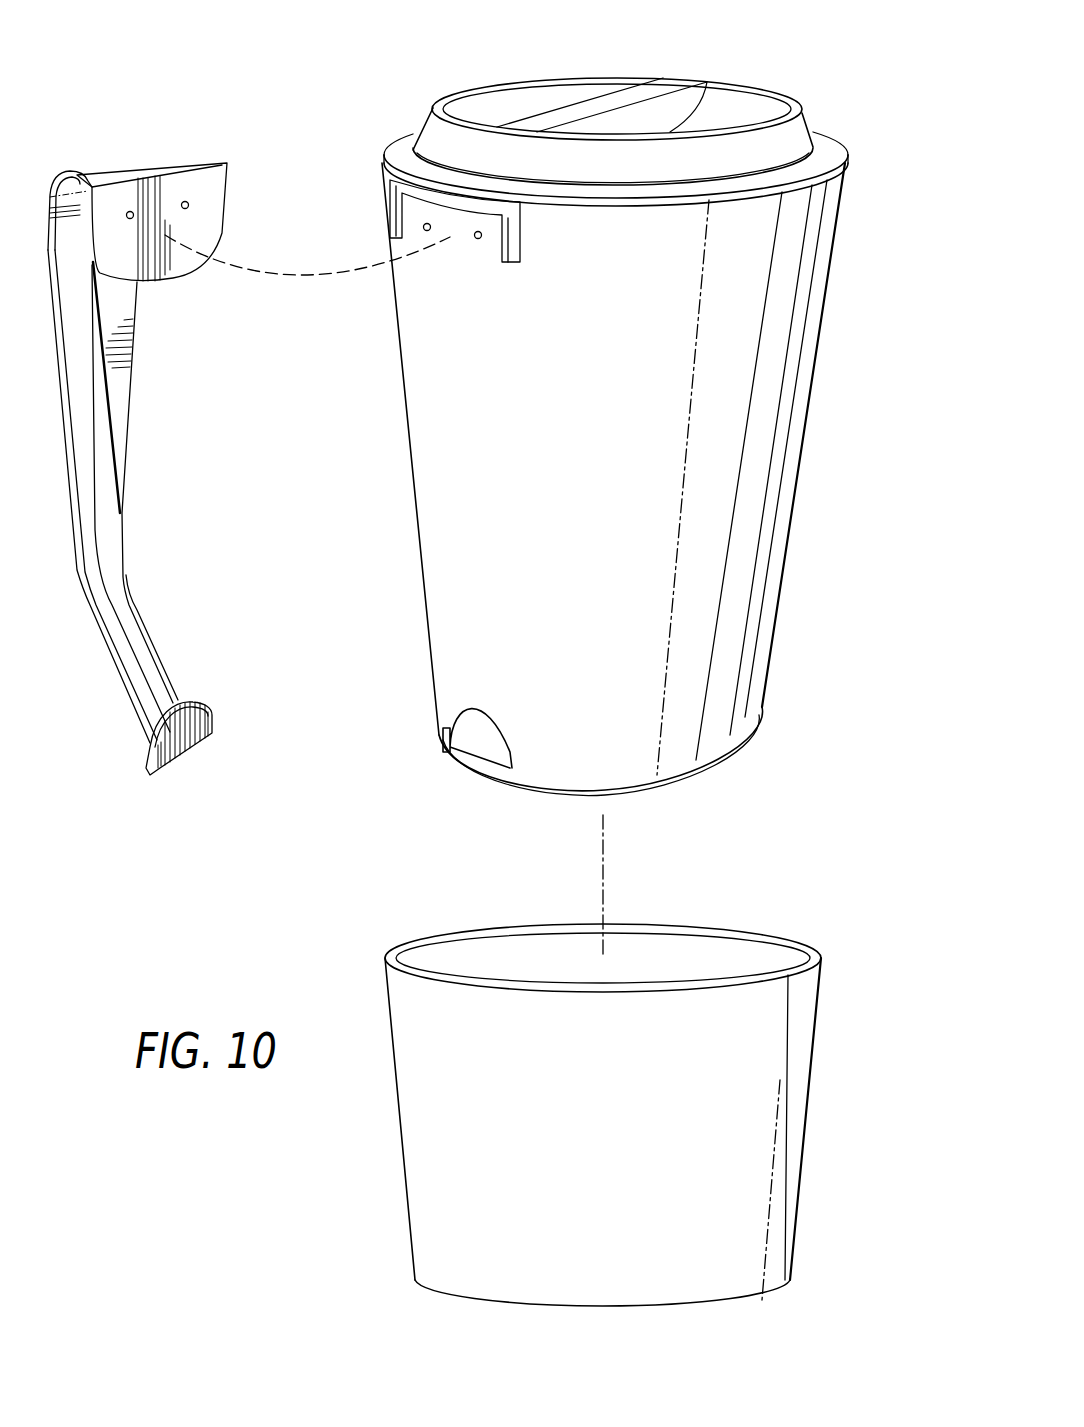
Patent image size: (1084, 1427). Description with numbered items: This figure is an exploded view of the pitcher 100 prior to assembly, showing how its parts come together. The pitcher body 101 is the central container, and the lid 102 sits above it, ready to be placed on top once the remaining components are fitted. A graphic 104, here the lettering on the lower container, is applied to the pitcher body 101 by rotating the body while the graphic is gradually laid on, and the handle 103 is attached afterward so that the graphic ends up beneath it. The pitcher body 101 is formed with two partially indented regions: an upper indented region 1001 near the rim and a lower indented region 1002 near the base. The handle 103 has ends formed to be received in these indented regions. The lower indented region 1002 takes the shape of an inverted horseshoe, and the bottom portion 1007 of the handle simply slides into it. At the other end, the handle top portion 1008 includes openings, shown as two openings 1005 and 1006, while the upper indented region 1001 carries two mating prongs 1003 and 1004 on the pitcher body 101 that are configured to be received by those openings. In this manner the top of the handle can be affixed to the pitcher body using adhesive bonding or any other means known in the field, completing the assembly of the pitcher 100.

The pitcher 100 is at (862, 218).
The pitcher body 101 is at (787, 352).
The lid 102 is at (491, 85).
The handle 103 is at (120, 398).
The graphic 104 is at (767, 1092).
The upper indented region 1001 is at (388, 198).
The lower indented region 1002 is at (480, 732).
The prong 1003 is at (420, 228).
The prong 1004 is at (476, 245).
The opening 1005 is at (130, 210).
The opening 1006 is at (185, 200).
The bottom portion of handle 1007 is at (171, 752).
The handle top portion 1008 is at (138, 260).